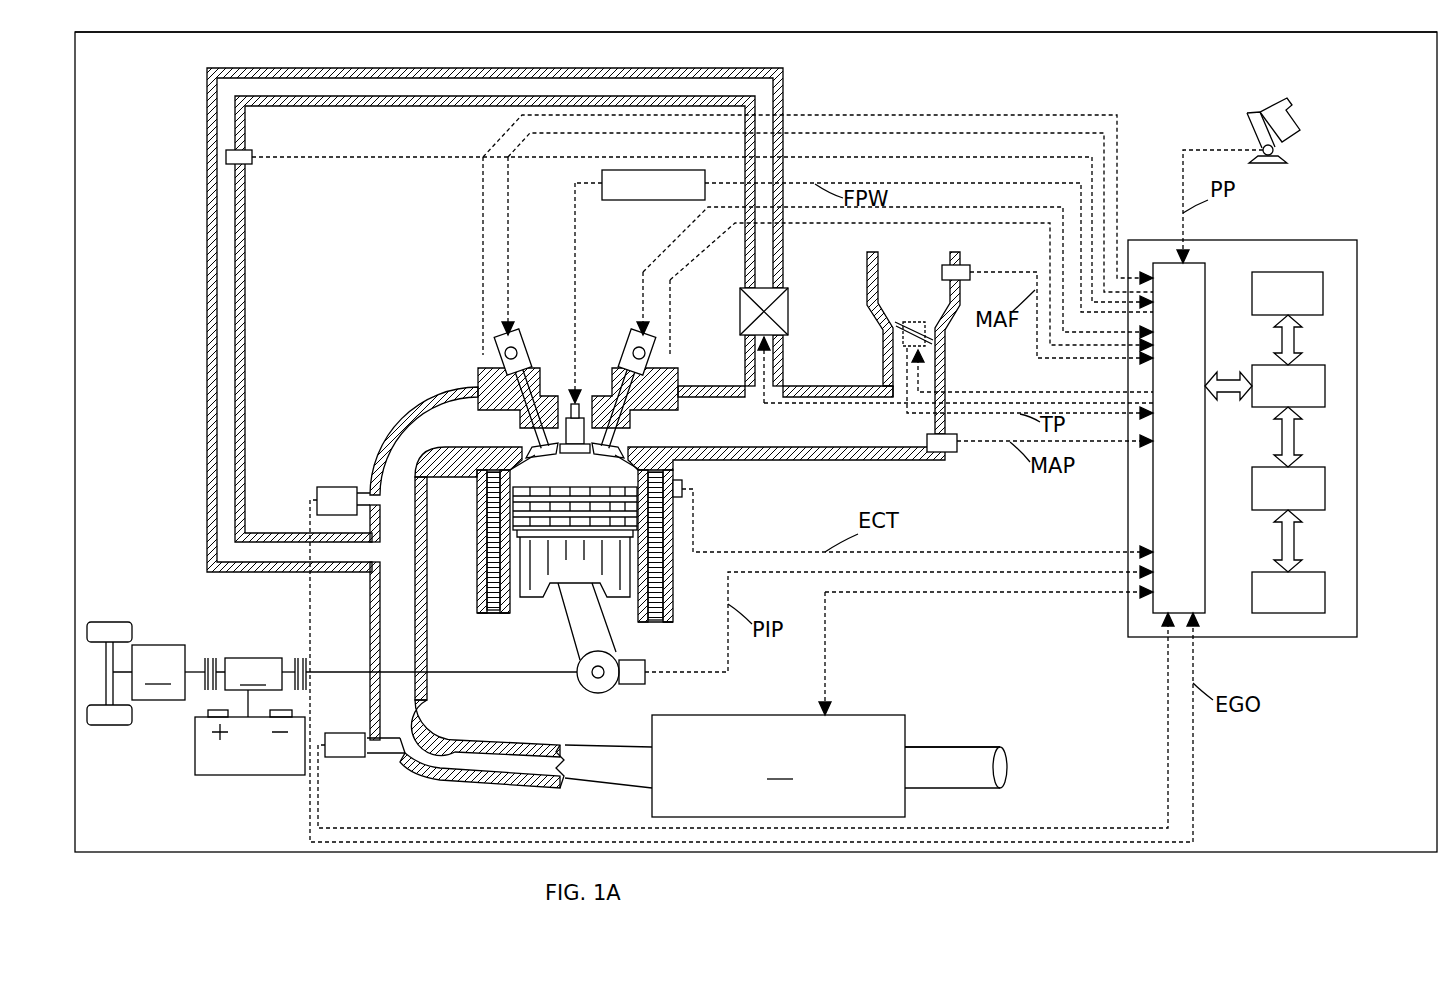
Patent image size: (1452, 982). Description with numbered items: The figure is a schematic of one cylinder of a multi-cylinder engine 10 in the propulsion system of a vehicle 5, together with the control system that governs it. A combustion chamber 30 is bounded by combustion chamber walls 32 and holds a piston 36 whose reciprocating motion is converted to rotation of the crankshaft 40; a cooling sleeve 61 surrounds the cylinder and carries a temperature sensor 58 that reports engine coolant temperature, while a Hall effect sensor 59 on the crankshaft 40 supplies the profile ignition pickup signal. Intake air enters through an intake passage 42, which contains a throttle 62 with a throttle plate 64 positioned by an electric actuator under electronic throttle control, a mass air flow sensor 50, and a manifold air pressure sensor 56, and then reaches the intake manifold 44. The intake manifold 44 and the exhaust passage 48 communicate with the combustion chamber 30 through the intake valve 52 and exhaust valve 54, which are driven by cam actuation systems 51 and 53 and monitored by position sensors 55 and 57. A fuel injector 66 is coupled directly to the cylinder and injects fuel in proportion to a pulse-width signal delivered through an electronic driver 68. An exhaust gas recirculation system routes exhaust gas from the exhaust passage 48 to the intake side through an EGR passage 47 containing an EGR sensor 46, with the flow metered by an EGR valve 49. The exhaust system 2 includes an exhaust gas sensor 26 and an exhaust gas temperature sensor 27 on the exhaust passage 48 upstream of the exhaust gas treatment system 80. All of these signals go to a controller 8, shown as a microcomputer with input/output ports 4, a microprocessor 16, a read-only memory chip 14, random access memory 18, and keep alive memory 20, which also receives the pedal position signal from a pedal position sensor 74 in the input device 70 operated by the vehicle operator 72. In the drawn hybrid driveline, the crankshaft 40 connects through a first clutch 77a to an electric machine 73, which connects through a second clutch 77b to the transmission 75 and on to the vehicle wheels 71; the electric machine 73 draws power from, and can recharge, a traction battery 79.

The vehicle 5 is at (108, 66).
The EGR passage 47 is at (482, 68).
The EGR sensor 46 is at (240, 164).
The electronic driver 68 is at (668, 200).
The input device 70 is at (1250, 128).
The vehicle operator 72 is at (1300, 112).
The pedal position sensor 74 is at (1278, 153).
The input/output ports 4 is at (1208, 272).
The controller 8 is at (1357, 248).
The read-only memory chip 14 is at (1323, 298).
The microprocessor 16 is at (1325, 390).
The random access memory 18 is at (1325, 490).
The keep alive memory 20 is at (1325, 594).
The engine 10 is at (408, 322).
The cam actuation system 53 is at (518, 336).
The cam actuation system 51 is at (632, 336).
The position sensor 57 is at (498, 350).
The exhaust valve 54 is at (538, 440).
The fuel injector 66 is at (580, 402).
The position sensor 55 is at (652, 350).
The EGR valve 49 is at (788, 312).
The intake passage 42 is at (922, 296).
The mass air flow sensor 50 is at (963, 265).
The throttle plate 64 is at (893, 325).
The throttle 62 is at (933, 338).
The exhaust passage 48 is at (455, 444).
The intake valve 52 is at (610, 440).
The intake manifold 44 is at (858, 440).
The exhaust gas sensor 26 is at (338, 487).
The manifold air pressure sensor 56 is at (957, 450).
The temperature sensor 58 is at (690, 498).
The combustion chamber 30 is at (490, 562).
The combustion chamber walls 32 is at (512, 606).
The piston 36 is at (560, 580).
The cooling sleeve 61 is at (670, 580).
The crankshaft 40 is at (585, 690).
The Hall effect sensor 59 is at (622, 684).
The exhaust gas temperature sensor 27 is at (348, 733).
The vehicle wheels 71 is at (100, 622).
The second clutch 77b is at (208, 658).
The first clutch 77a is at (298, 658).
The transmission 75 is at (168, 672).
The electric machine 73 is at (260, 674).
The traction battery 79 is at (258, 776).
The exhaust system 2 is at (908, 662).
The exhaust gas treatment system 80 is at (902, 701).